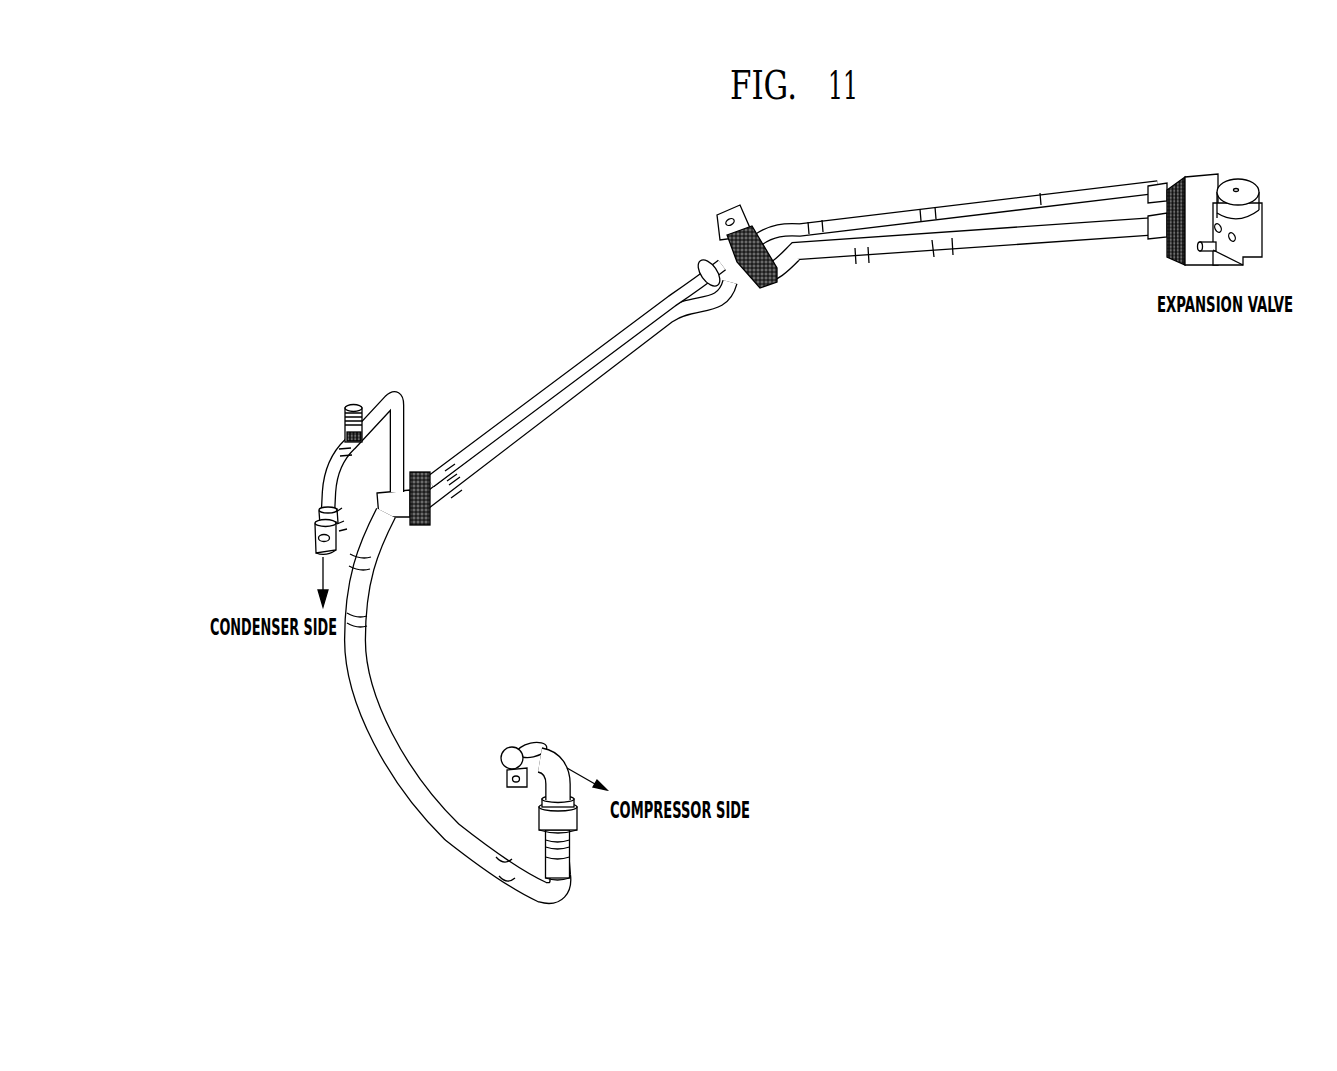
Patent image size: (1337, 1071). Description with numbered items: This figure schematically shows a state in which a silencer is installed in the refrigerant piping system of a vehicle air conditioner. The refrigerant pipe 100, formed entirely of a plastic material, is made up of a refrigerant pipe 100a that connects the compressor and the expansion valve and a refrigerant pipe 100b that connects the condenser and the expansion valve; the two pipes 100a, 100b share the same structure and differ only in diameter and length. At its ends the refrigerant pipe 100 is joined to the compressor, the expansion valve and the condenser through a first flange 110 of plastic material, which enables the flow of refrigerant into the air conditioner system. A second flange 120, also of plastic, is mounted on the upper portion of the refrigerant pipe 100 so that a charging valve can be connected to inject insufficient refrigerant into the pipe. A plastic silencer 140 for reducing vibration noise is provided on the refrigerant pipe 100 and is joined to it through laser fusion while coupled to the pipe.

The refrigerant pipe 100 is at (594, 259).
The refrigerant pipe 100a is at (597, 383).
The refrigerant pipe 100b is at (535, 403).
The first flange 110 is at (317, 550).
The second flange 120 is at (362, 390).
The silencer 140 is at (590, 836).